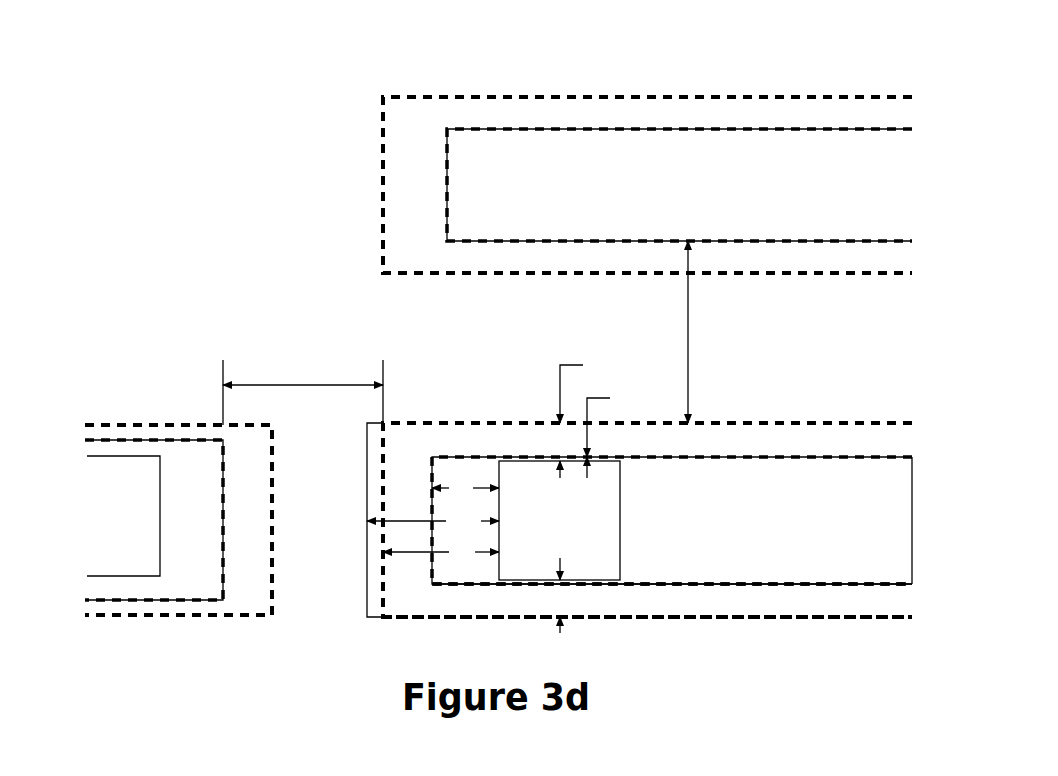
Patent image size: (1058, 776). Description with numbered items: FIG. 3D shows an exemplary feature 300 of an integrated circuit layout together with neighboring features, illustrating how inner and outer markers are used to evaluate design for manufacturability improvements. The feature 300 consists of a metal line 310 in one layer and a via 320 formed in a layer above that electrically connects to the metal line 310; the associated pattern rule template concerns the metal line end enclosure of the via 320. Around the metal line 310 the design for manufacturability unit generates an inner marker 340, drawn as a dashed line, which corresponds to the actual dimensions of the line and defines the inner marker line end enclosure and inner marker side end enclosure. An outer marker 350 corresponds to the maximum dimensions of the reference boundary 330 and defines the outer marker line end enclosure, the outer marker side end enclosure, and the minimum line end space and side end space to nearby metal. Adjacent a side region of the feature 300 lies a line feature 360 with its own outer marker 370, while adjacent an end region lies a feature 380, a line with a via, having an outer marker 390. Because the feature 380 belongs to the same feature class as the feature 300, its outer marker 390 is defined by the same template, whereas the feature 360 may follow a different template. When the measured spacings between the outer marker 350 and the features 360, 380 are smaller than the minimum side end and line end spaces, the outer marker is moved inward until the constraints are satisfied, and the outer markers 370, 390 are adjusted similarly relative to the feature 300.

The feature 300 is at (198, 70).
The metal line 310 is at (783, 477).
The via 320 is at (520, 478).
The reference boundary 330 is at (866, 423).
The inner marker 340 is at (834, 587).
The outer marker 350 is at (737, 618).
The feature 360 is at (478, 177).
The outer marker 370 is at (383, 210).
The feature 380 is at (127, 447).
The outer marker 390 is at (182, 423).